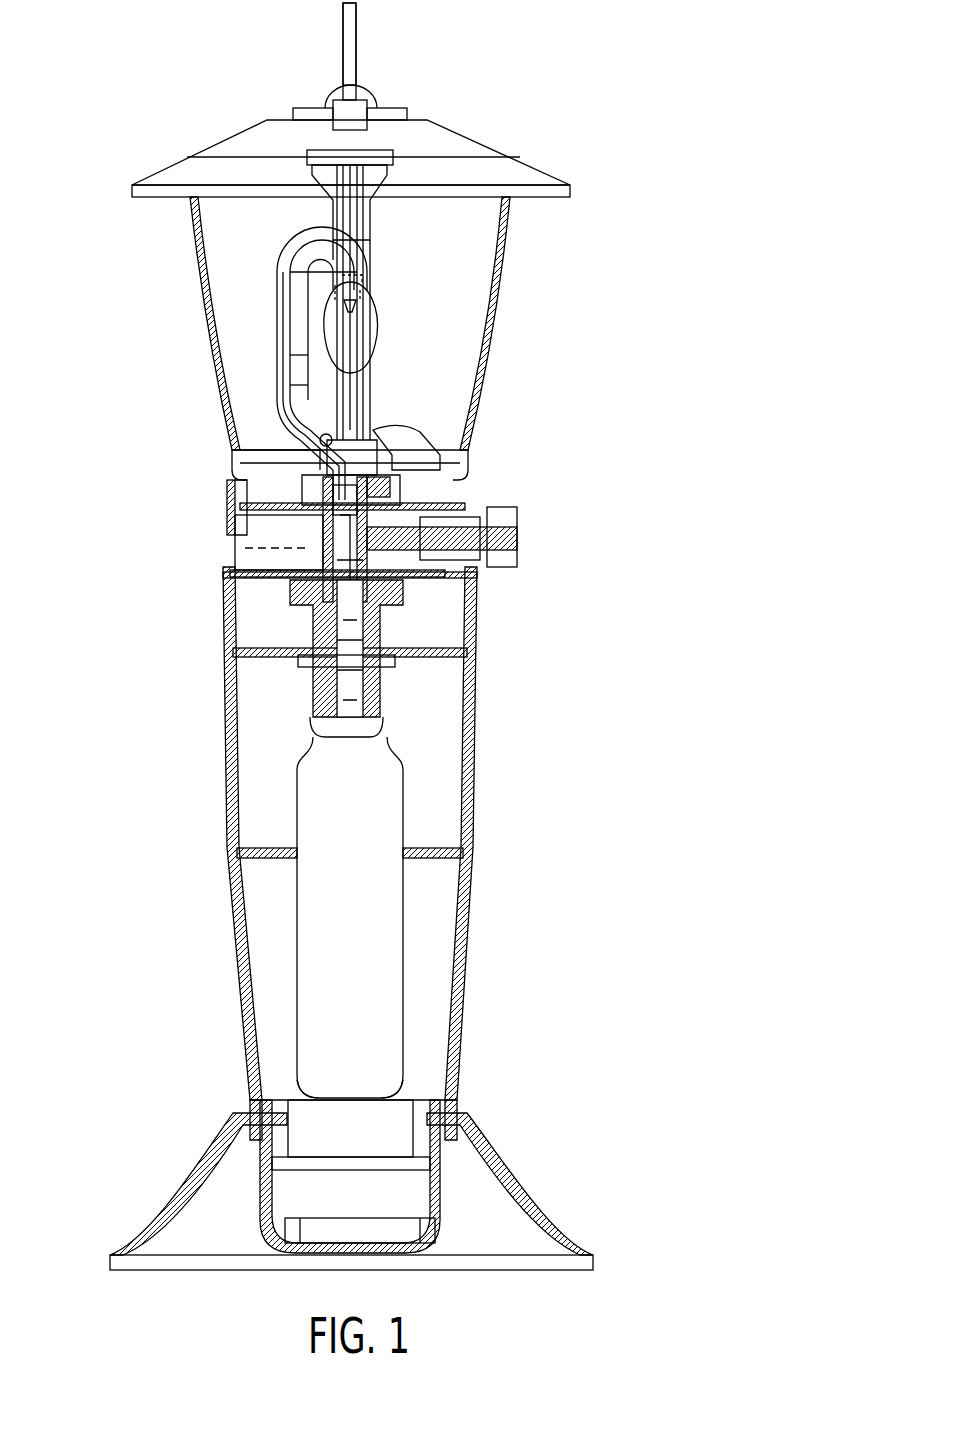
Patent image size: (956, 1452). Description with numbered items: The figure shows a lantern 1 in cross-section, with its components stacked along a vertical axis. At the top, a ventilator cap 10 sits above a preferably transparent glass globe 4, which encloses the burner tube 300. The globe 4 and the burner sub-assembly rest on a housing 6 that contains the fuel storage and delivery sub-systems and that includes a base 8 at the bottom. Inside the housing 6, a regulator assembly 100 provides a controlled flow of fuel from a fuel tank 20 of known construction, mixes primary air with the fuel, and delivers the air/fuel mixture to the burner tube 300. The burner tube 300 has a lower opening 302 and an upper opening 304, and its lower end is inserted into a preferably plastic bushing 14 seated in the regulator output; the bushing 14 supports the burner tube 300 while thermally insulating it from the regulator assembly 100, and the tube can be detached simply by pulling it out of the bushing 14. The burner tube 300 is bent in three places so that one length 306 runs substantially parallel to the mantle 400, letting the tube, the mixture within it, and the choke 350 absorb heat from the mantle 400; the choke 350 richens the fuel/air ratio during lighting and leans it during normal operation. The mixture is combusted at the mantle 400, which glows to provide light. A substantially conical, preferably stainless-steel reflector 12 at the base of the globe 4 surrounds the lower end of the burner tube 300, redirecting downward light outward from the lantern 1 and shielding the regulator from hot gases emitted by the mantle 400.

The lantern 1 is at (622, 190).
The glass globe 4 is at (483, 350).
The housing 6 is at (478, 735).
The base 8 is at (513, 1190).
The ventilator cap 10 is at (450, 125).
The reflector 12 is at (473, 480).
The bushing 14 is at (230, 493).
The fuel tank 20 is at (380, 1013).
The regulator assembly 100 is at (387, 627).
The burner tube 300 is at (270, 387).
The lower opening 302 is at (380, 445).
The upper opening 304 is at (377, 317).
The length of the burner tube 306 is at (277, 340).
The choke 350 is at (298, 293).
The mantle 400 is at (380, 330).